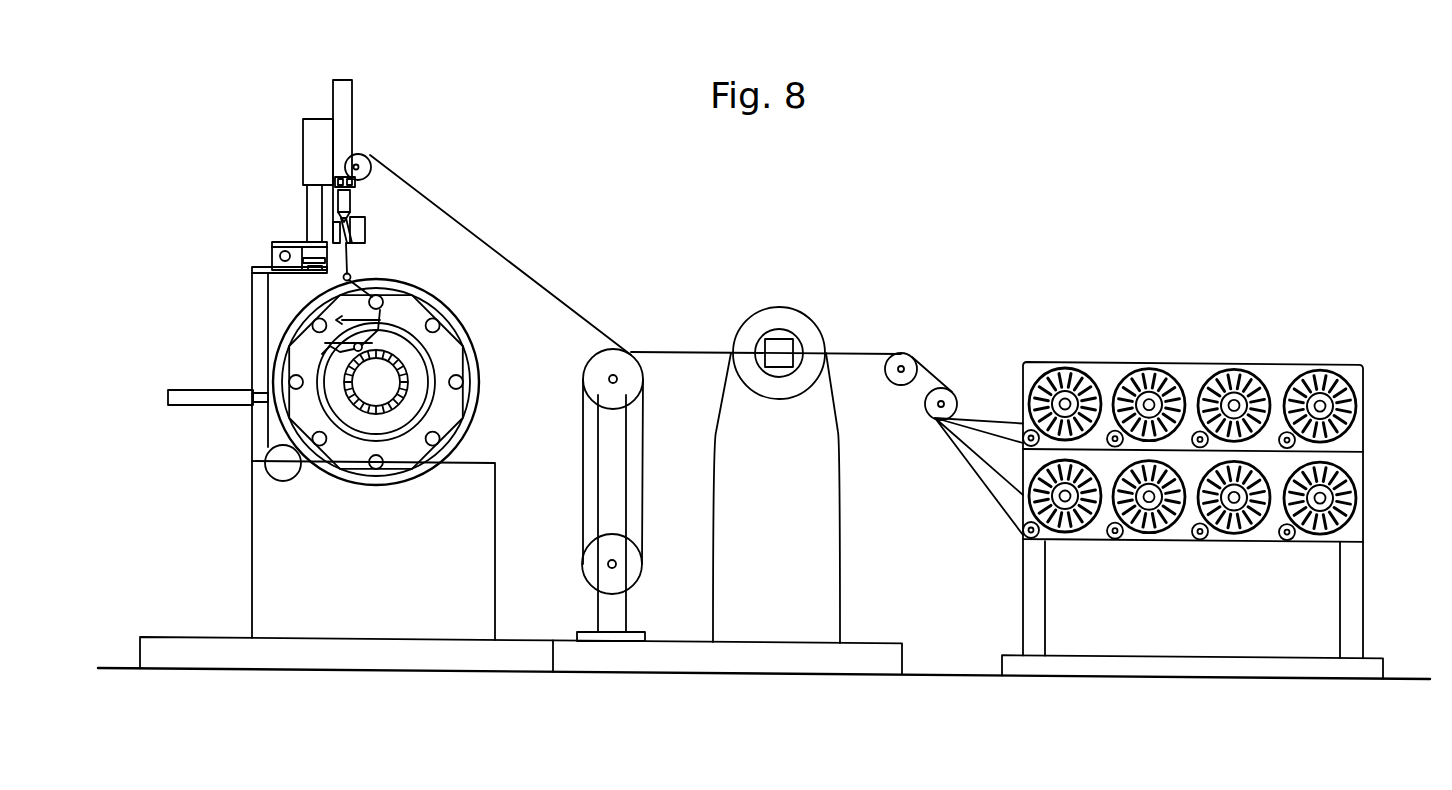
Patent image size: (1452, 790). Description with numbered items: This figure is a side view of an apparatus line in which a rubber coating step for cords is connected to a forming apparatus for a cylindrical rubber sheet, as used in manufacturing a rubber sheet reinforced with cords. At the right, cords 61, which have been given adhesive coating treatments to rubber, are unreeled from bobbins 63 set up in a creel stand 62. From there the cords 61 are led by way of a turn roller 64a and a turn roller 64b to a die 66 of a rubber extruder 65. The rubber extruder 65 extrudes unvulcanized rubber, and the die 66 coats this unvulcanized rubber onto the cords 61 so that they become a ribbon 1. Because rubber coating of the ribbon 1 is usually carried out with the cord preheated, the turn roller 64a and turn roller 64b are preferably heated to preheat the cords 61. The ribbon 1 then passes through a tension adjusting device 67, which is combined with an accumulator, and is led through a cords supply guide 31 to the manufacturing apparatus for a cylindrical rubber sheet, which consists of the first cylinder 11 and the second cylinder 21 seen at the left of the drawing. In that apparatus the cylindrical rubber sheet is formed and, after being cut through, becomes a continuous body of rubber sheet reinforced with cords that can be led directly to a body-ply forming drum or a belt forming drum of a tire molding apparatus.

The ribbon 1 is at (560, 297).
The first cylinder 11 is at (408, 313).
The second cylinder 21 is at (403, 368).
The cords supply guide 31 is at (357, 214).
The cords 61 is at (983, 420).
The creel stand 62 is at (1352, 451).
The bobbins 63 is at (1087, 380).
The turn roller 64a is at (942, 388).
The turn roller 64b is at (900, 386).
The rubber extruder 65 is at (813, 568).
The die 66 is at (773, 340).
The tension adjusting device 67 is at (583, 383).